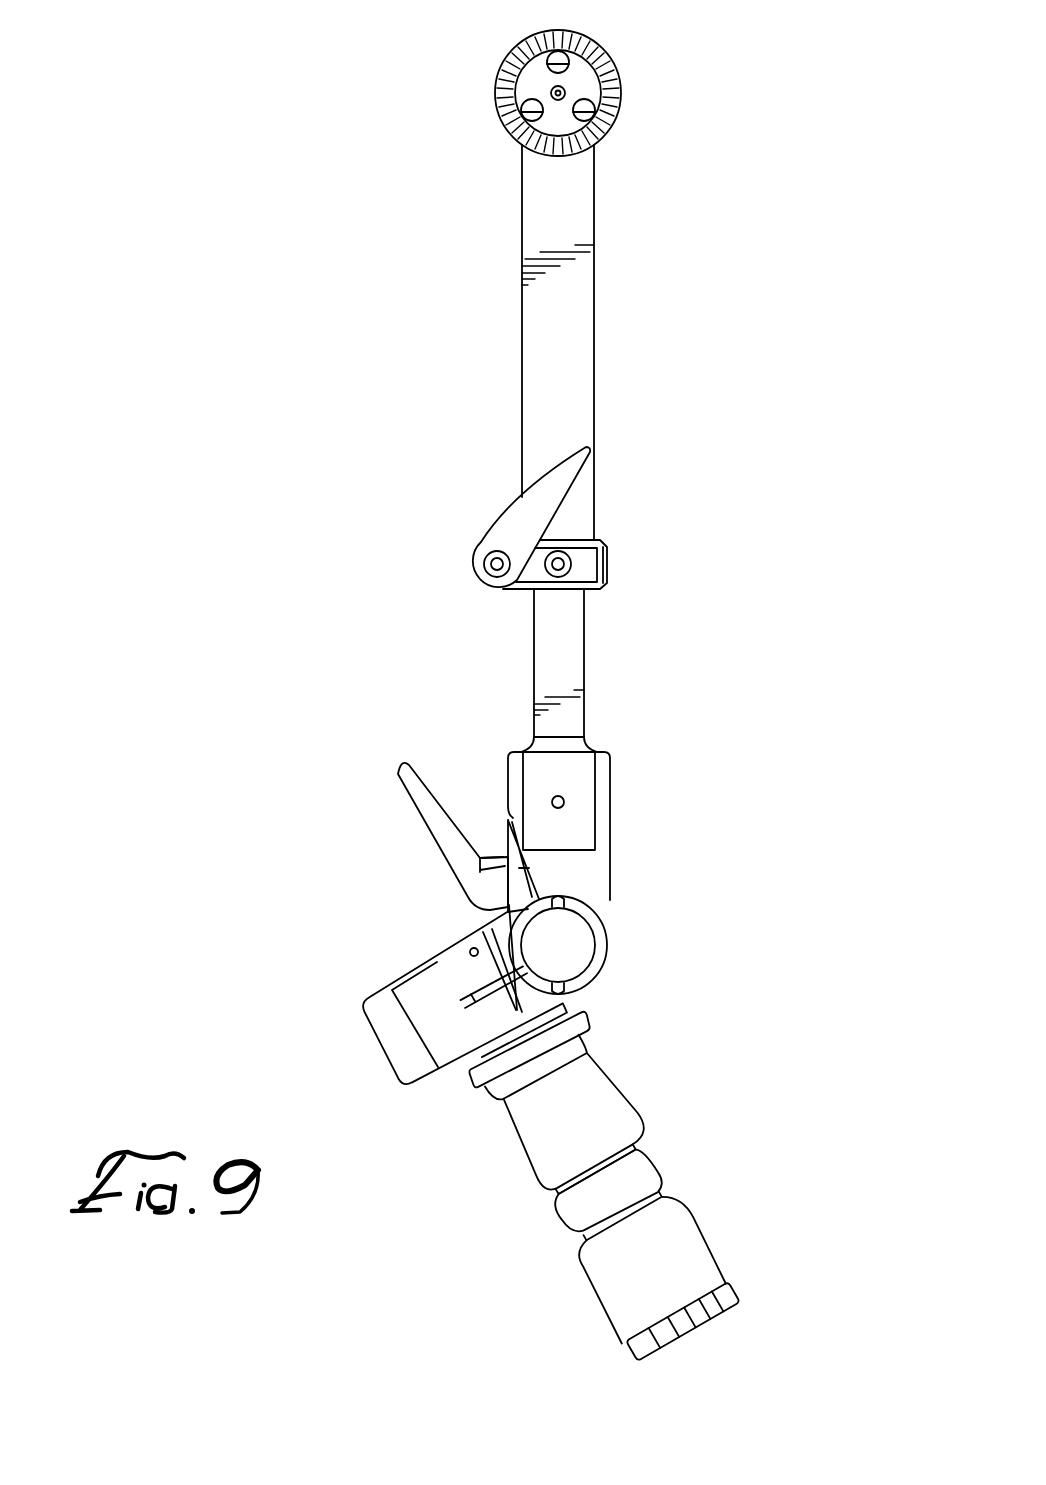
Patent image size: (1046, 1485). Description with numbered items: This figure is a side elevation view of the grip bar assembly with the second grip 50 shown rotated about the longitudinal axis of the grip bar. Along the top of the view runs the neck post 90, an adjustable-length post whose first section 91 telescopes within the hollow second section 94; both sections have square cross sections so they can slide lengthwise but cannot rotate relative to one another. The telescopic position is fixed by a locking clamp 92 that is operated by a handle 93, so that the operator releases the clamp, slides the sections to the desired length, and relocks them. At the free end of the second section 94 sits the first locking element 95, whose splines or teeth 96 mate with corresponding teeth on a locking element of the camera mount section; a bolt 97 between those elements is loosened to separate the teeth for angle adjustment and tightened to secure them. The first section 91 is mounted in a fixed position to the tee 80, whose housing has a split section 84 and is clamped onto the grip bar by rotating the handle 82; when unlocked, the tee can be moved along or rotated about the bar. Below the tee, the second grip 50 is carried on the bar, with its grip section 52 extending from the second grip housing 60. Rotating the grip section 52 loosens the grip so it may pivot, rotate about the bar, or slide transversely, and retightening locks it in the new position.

The second grip 50 is at (598, 1023).
The grip section 52 is at (633, 1113).
The second grip housing 60 is at (490, 922).
The tee 80 is at (620, 840).
The handle 82 is at (465, 873).
The split section 84 is at (508, 818).
The neck post 90 is at (573, 592).
The first section 91 is at (583, 630).
The locking clamp 92 is at (520, 590).
The handle 93 is at (553, 493).
The second section 94 is at (580, 317).
The first locking element 95 is at (498, 78).
The splines or teeth 96 is at (594, 51).
The bolt 97 is at (560, 100).